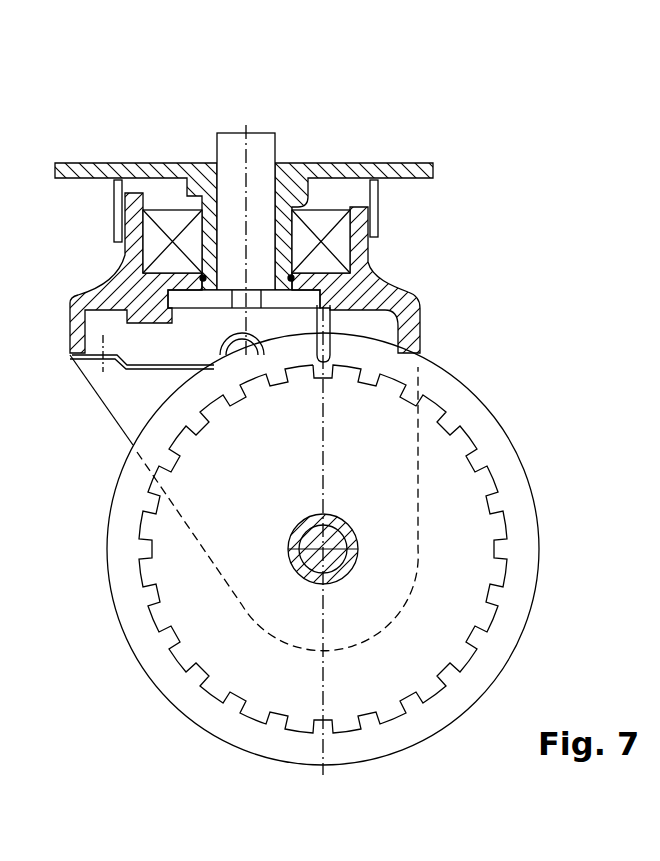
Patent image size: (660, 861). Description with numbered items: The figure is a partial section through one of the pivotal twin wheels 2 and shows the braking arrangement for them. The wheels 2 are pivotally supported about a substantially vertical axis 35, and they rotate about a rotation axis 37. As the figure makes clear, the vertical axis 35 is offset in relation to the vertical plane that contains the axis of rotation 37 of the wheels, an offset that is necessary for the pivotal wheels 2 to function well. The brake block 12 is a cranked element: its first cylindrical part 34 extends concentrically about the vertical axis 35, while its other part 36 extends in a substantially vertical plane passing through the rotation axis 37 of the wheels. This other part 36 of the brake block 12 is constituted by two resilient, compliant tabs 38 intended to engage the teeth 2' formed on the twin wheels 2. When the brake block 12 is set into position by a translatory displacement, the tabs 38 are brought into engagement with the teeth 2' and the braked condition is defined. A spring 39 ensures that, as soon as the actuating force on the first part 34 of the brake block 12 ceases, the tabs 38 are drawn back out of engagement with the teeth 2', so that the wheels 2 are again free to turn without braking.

The pivotal wheels 2 is at (369, 541).
The teeth 2' is at (362, 549).
The brake block 12 is at (262, 153).
The first cylindrical part 34 is at (233, 172).
The vertical axis 35 is at (247, 128).
The other part 36 is at (410, 292).
The rotation axis 37 is at (346, 567).
The resilient compliant tabs 38 is at (330, 348).
The spring 39 is at (130, 360).